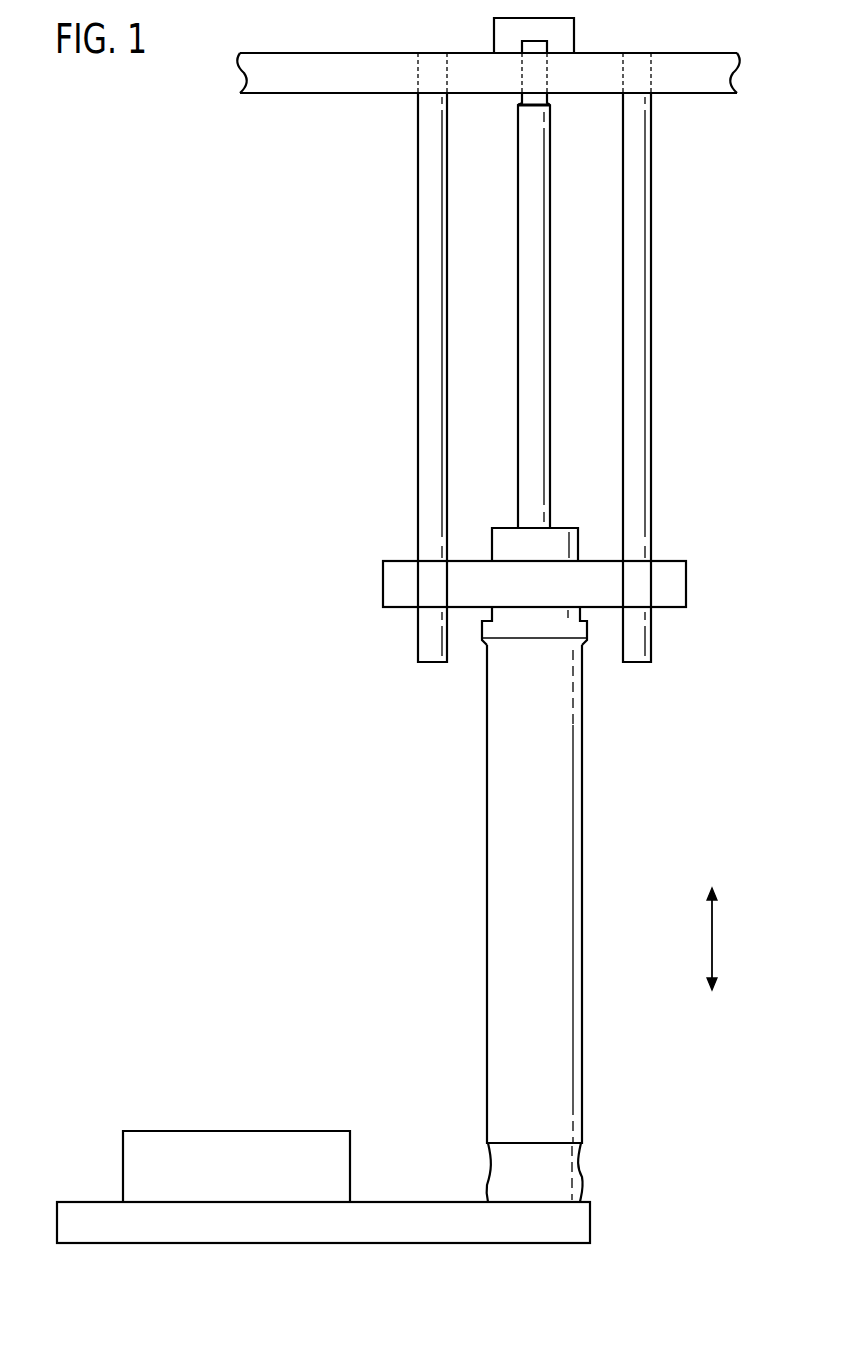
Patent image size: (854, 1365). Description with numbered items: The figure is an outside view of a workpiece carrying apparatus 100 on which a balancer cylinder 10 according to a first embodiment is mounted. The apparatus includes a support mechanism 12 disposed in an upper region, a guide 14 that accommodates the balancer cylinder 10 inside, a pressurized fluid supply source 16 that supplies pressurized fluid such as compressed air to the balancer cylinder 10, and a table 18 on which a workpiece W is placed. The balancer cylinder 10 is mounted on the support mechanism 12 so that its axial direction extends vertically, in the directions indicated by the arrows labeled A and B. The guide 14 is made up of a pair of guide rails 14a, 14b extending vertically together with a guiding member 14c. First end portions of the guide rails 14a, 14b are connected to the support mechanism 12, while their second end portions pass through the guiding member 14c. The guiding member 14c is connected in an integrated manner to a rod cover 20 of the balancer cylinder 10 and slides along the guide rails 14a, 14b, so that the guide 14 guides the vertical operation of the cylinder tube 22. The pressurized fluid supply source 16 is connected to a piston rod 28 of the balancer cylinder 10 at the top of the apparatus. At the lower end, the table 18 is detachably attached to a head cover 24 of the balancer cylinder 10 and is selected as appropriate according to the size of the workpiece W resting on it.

The workpiece carrying apparatus 100 is at (210, 126).
The support mechanism 12 is at (698, 86).
The pressurized fluid supply source 16 is at (502, 33).
The piston rod 28 is at (552, 205).
The guide 14 is at (301, 465).
The guide rail 14a is at (425, 465).
The guide rail 14b is at (632, 473).
The guiding member 14c is at (383, 577).
The rod cover 20 is at (578, 533).
The balancer cylinder 10 is at (526, 904).
The cylinder tube 22 is at (557, 767).
The head cover 24 is at (563, 1170).
The table 18 is at (413, 1202).
The workpiece W is at (257, 1136).